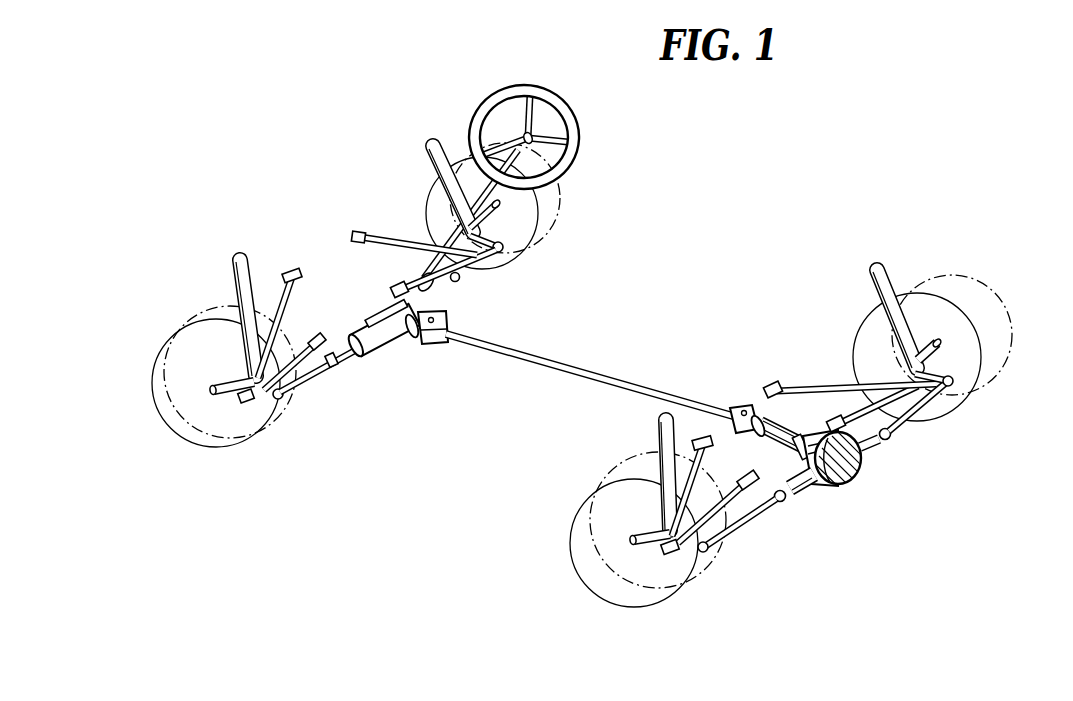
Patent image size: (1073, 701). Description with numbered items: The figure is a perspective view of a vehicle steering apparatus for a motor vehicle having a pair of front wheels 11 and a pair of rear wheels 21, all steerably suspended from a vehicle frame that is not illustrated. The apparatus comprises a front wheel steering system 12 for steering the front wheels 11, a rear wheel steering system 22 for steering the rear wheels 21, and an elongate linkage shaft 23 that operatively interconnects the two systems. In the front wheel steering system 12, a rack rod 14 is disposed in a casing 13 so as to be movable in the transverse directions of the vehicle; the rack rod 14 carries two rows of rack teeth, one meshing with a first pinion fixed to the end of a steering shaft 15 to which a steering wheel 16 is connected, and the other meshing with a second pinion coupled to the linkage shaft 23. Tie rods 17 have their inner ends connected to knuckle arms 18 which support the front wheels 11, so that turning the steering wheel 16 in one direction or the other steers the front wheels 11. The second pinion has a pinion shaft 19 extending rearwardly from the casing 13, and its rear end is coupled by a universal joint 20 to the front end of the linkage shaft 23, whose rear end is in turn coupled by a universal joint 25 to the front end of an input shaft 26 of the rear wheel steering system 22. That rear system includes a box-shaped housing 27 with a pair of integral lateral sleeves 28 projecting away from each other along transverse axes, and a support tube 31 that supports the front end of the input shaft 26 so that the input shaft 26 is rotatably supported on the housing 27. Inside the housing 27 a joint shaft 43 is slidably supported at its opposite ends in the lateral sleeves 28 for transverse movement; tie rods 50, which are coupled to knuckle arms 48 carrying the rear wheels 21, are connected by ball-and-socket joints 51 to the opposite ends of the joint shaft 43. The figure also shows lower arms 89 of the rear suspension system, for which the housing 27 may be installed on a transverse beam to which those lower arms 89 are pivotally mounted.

The front wheels 11 is at (560, 210).
The front wheel steering system 12 is at (360, 264).
The casing 13 is at (366, 330).
The rack rod 14 is at (342, 362).
The steering shaft 15 is at (442, 232).
The steering wheel 16 is at (579, 122).
The tie rods 17 is at (492, 262).
The knuckle arms 18 is at (502, 240).
The pinion shaft 19 is at (412, 338).
The universal joint 20 is at (440, 346).
The rear wheels 21 is at (985, 396).
The rear wheel steering system 22 is at (754, 355).
The linkage shaft 23 is at (558, 368).
The universal joint 25 is at (738, 405).
The input shaft 26 is at (757, 436).
The housing 27 is at (856, 478).
The lateral sleeves 28 is at (876, 452).
The support tube 31 is at (798, 398).
The joint shaft 43 is at (802, 498).
The knuckle arms 48 is at (968, 372).
The tie rods 50 is at (934, 404).
The ball-and-socket joints 51 is at (892, 440).
The lower arms 89 is at (860, 408).